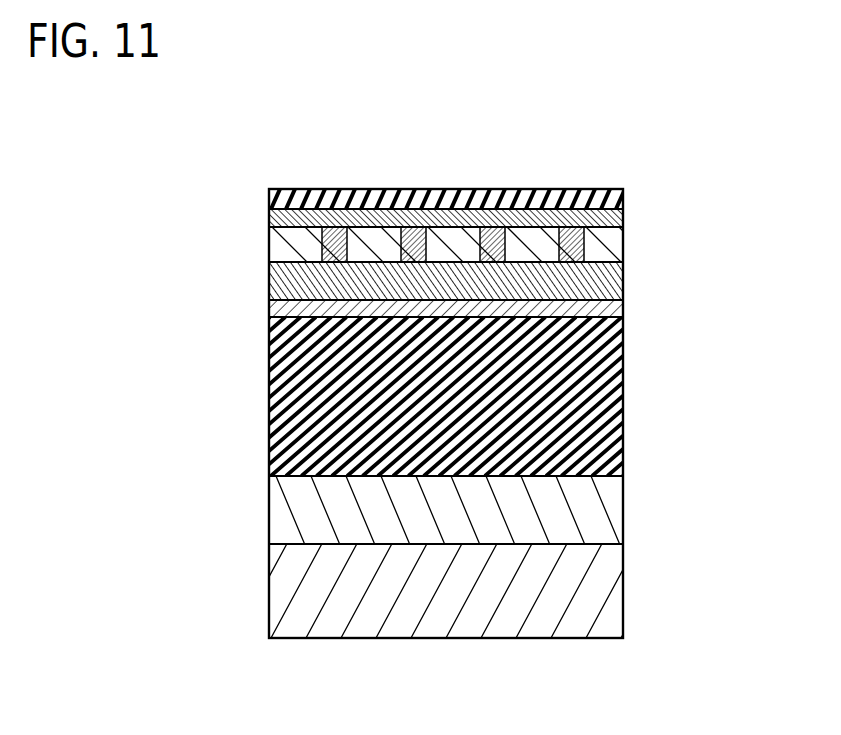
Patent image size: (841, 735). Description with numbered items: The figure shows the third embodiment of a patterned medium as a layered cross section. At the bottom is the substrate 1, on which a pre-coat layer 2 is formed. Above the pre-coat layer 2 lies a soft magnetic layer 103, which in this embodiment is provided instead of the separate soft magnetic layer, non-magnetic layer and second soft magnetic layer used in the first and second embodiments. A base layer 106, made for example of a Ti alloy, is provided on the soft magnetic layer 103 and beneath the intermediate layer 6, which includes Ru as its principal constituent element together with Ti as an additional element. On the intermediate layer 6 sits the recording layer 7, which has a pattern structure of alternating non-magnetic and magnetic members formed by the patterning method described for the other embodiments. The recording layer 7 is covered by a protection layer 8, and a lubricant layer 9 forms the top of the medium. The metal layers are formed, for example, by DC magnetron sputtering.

The substrate 1 is at (624, 590).
The pre-coat layer 2 is at (624, 512).
The soft magnetic layer 103 is at (624, 398).
The base layer 106 is at (268, 307).
The intermediate layer 6 is at (624, 283).
The recording layer 7 is at (624, 240).
The protection layer 8 is at (624, 215).
The lubricant layer 9 is at (594, 189).